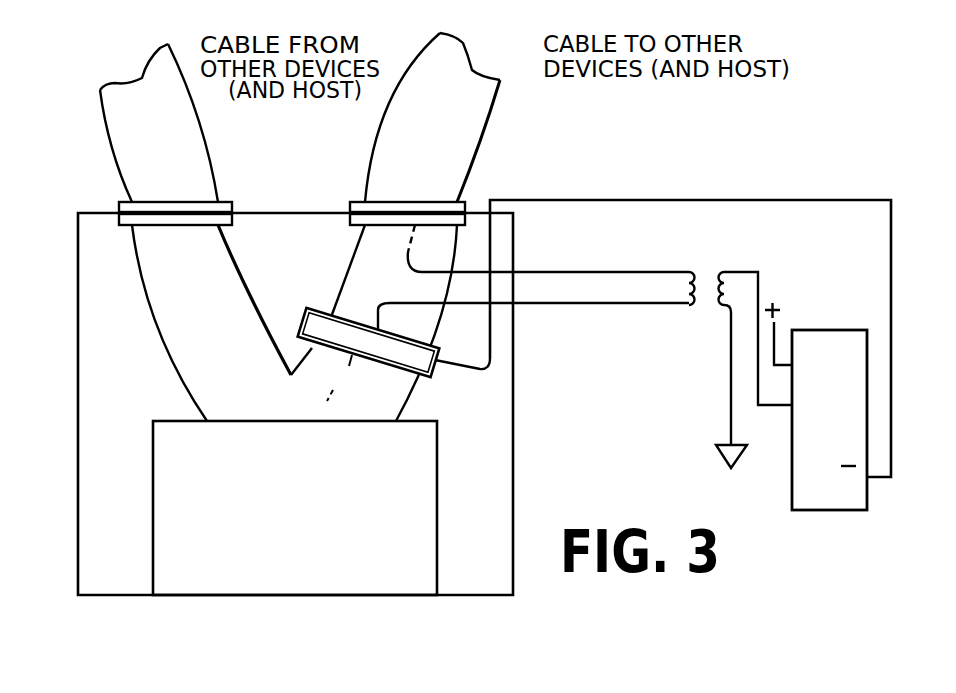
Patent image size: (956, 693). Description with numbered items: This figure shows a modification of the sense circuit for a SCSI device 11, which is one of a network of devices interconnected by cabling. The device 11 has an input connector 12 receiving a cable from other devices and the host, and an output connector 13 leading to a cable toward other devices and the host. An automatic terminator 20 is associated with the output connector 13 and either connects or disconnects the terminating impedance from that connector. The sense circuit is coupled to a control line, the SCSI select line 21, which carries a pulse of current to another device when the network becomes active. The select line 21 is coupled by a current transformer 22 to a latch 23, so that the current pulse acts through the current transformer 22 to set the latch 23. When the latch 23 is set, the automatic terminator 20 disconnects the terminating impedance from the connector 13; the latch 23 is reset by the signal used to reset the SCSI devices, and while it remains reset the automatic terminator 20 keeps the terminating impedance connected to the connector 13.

The device 11 is at (165, 500).
The input connector 12 is at (118, 208).
The output connector 13 is at (350, 212).
The automatic terminator 20 is at (368, 359).
The SCSI select line 21 is at (378, 312).
The current transformer 22 is at (696, 299).
The latch 23 is at (818, 330).